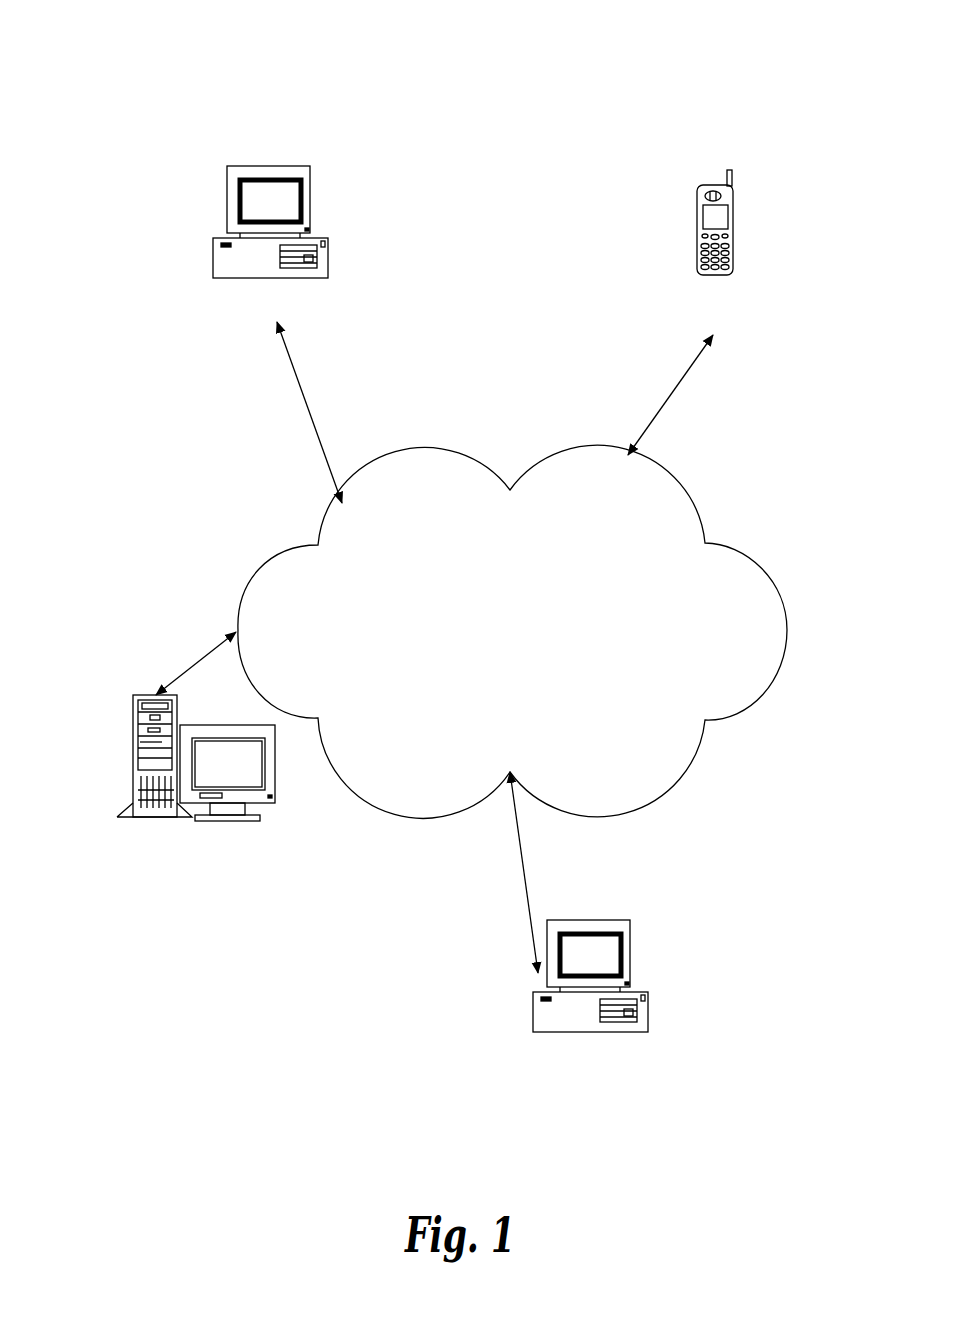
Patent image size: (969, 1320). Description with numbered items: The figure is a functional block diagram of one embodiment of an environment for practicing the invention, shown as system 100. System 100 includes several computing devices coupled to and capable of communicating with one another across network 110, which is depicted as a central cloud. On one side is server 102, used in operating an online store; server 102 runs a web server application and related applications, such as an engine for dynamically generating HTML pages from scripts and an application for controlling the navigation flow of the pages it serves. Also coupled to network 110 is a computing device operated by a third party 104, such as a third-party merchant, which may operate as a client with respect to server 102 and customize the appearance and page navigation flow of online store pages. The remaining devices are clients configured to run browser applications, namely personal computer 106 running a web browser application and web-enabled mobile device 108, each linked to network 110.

The system 100 is at (552, 92).
The server 102 is at (133, 748).
The third party 104 is at (533, 1005).
The personal computer 106 is at (213, 257).
The web-enabled mobile device 108 is at (733, 210).
The network 110 is at (785, 625).